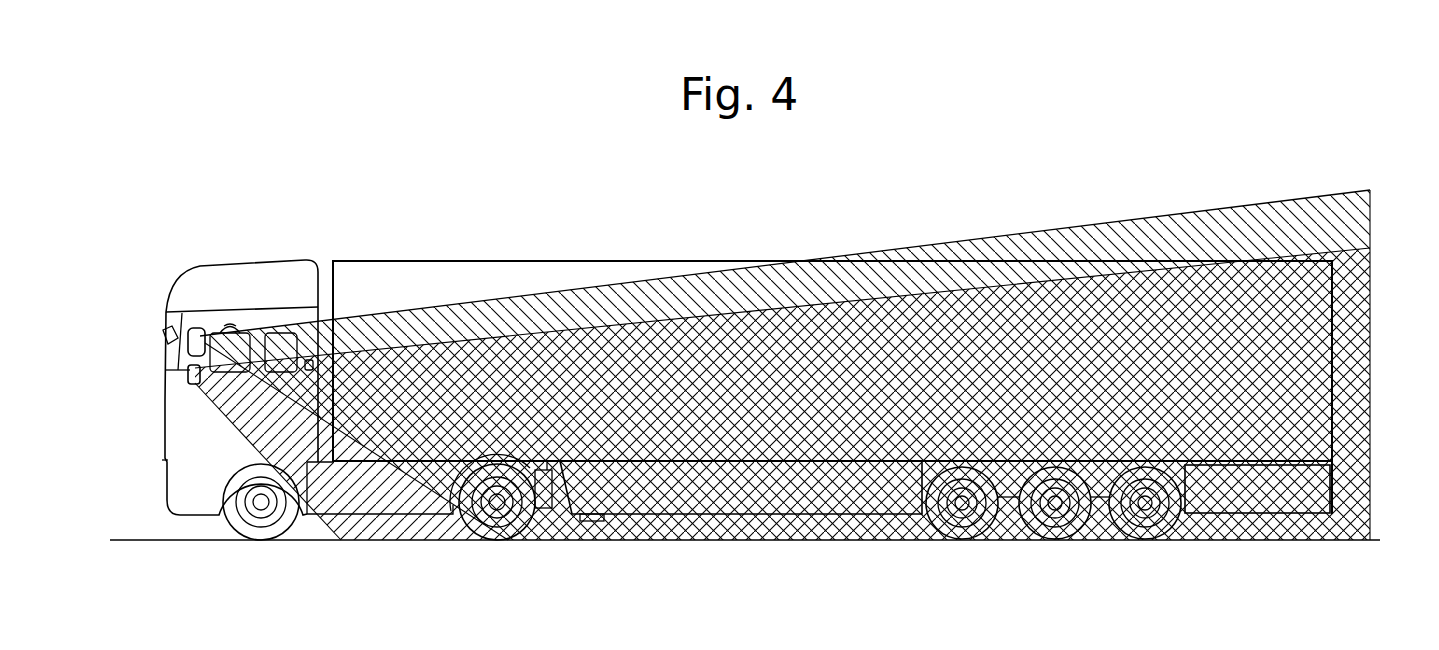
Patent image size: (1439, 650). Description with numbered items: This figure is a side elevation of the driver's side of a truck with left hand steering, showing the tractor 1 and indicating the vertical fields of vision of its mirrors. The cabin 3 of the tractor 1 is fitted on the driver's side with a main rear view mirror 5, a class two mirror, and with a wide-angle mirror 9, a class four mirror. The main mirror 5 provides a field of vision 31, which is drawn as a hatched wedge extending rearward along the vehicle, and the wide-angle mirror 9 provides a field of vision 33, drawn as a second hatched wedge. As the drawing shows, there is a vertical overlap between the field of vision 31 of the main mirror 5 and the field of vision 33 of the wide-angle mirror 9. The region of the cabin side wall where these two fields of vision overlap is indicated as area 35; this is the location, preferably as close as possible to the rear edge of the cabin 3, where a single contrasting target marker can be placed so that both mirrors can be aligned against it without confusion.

The tractor 1 is at (124, 228).
The cabin 3 is at (192, 432).
The main rear view mirror 5 is at (203, 344).
The wide-angle mirror 9 is at (188, 377).
The field of vision 31 is at (1246, 233).
The field of vision 33 is at (418, 526).
The overlap area 35 is at (310, 366).